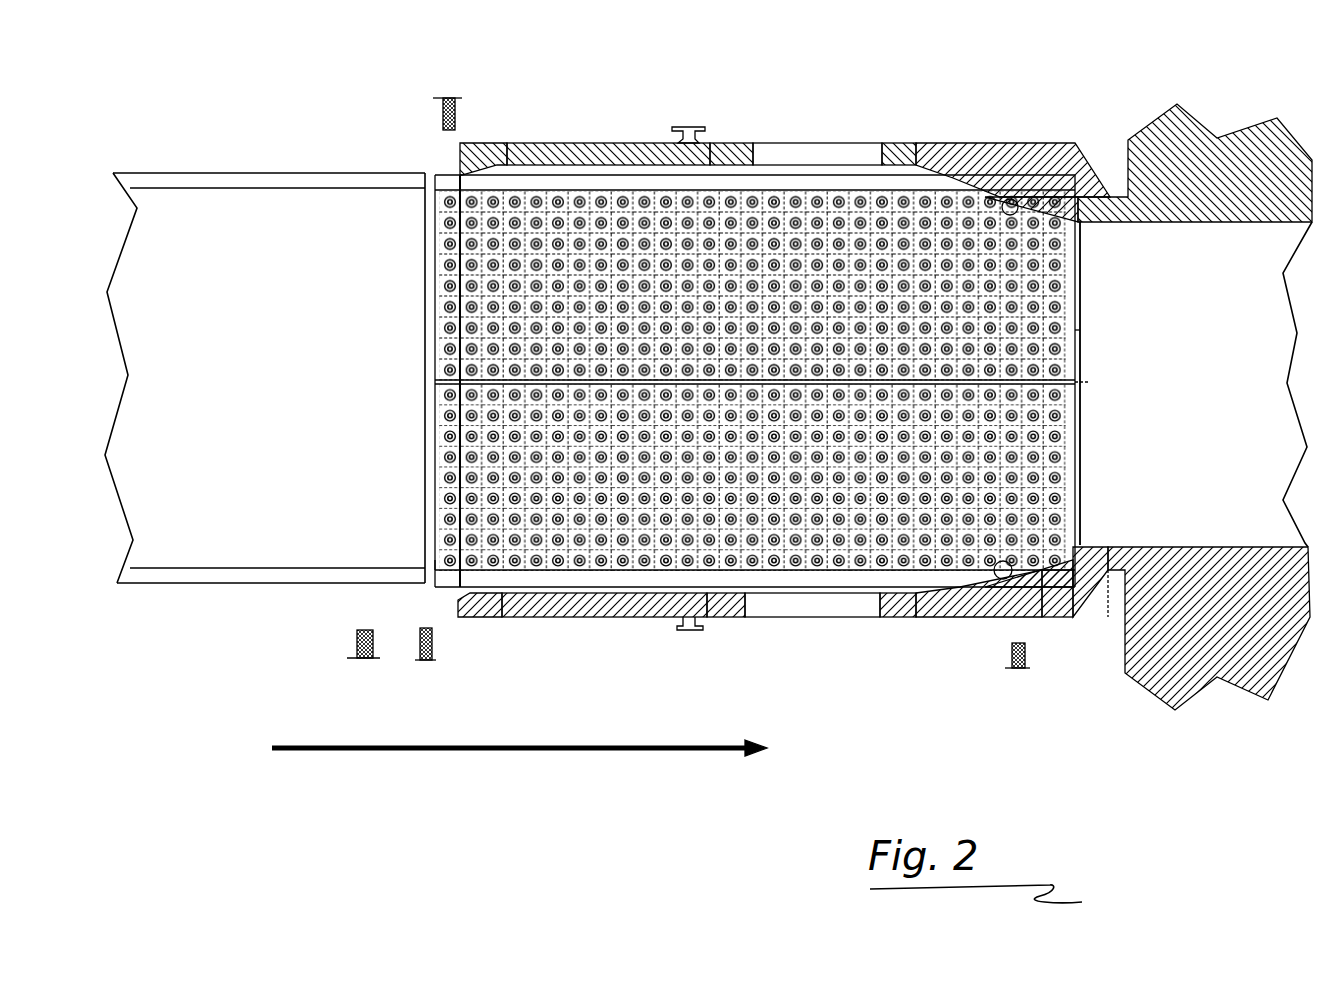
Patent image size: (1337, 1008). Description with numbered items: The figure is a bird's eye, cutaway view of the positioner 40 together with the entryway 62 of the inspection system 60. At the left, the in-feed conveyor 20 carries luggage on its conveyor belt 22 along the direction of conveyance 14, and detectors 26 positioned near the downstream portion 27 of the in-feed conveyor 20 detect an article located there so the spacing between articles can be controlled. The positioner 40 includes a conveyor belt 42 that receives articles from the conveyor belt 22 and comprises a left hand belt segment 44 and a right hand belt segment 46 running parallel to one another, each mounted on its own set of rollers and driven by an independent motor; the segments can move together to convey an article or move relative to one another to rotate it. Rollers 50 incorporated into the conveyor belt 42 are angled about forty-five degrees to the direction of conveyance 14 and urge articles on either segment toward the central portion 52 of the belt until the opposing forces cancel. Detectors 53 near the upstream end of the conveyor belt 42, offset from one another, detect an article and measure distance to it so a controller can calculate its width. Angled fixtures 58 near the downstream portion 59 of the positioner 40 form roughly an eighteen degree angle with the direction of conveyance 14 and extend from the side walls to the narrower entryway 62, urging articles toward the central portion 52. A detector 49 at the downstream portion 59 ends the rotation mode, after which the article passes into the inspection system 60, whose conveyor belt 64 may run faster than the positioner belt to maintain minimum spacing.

The direction of conveyance 14 is at (549, 749).
The in-feed conveyor 20 is at (265, 330).
The conveyor belt 22 is at (248, 260).
The detectors 26 is at (362, 660).
The downstream portion 27 is at (415, 328).
The positioner 40 is at (966, 150).
The conveyor belt 42 is at (762, 379).
The left hand belt segment 44 is at (752, 320).
The right hand belt segment 46 is at (800, 510).
The detector 49 is at (1030, 655).
The rollers 50 is at (621, 200).
The central portion 52 is at (747, 383).
The detectors 53 is at (445, 97).
The angled fixtures 58 is at (1000, 197).
The downstream portion 59 is at (1060, 352).
The inspection system 60 is at (1160, 127).
The entryway 62 is at (1126, 432).
The conveyor belt 64 is at (1252, 292).